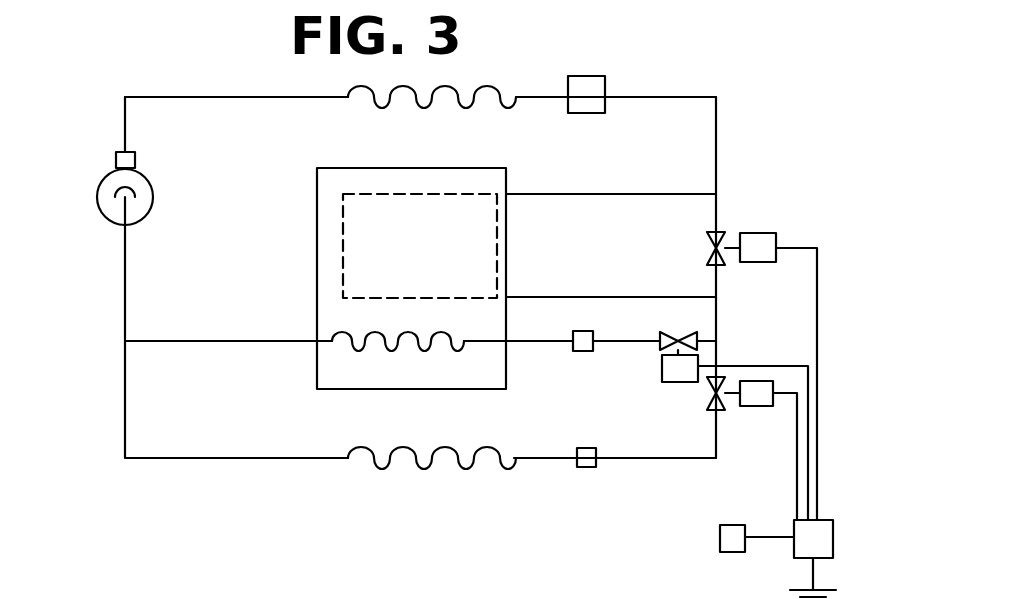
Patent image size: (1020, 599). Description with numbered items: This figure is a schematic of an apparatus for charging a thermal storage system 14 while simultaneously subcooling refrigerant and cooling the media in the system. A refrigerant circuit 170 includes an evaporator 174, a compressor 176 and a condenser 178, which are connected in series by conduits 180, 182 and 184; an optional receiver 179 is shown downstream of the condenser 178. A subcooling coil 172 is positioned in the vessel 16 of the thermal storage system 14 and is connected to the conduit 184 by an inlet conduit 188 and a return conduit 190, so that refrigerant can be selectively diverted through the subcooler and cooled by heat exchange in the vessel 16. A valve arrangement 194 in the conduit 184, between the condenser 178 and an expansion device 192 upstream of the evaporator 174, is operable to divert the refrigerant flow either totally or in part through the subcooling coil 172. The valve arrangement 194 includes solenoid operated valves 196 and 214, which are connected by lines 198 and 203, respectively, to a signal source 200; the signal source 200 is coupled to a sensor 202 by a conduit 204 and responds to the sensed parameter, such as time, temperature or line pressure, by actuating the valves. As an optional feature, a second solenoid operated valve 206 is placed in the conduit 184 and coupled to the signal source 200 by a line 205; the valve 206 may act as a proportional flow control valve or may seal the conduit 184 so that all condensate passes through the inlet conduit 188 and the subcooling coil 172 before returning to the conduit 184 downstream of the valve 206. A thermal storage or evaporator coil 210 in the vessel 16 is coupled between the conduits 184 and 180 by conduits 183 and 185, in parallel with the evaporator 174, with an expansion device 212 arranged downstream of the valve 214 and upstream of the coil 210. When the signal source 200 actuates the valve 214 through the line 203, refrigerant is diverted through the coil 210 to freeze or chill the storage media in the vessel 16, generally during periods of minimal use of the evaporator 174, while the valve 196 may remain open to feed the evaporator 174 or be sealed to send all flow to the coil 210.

The thermal storage system 14 is at (298, 205).
The vessel 16 is at (464, 186).
The refrigerant circuit 170 is at (108, 326).
The subcooling coil 172 is at (373, 196).
The evaporator 174 is at (378, 470).
The compressor 176 is at (107, 216).
The condenser 178 is at (381, 108).
The receiver 179 is at (599, 76).
The conduit 180 is at (125, 440).
The conduit 182 is at (262, 97).
The conduit 183 is at (558, 339).
The conduit 184 is at (718, 165).
The conduit 185 is at (243, 343).
The inlet conduit 188 is at (603, 194).
The return conduit 190 is at (563, 296).
The expansion device 192 is at (586, 468).
The valve arrangement 194 is at (739, 447).
The solenoid operated valve 196 is at (712, 405).
The line 198 is at (786, 397).
The signal source 200 is at (833, 545).
The sensor 202 is at (720, 537).
The line 203 is at (738, 366).
The conduit 204 is at (763, 537).
The line 205 is at (818, 349).
The solenoid operated valve 206 is at (707, 262).
The evaporator coil 210 is at (423, 351).
The expansion device 212 is at (580, 352).
The solenoid operated valve 214 is at (672, 332).